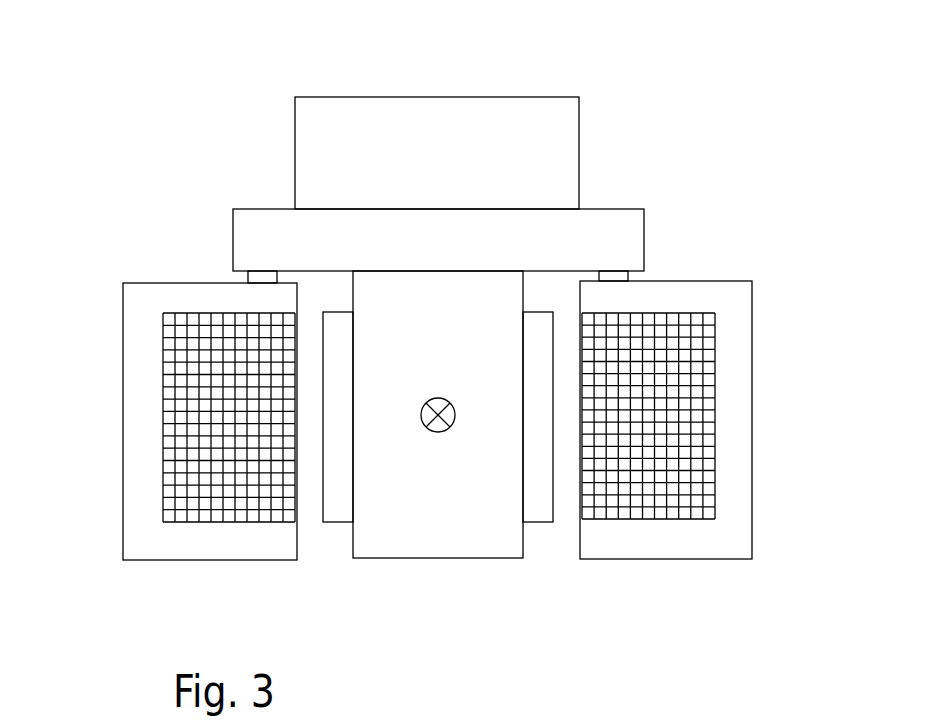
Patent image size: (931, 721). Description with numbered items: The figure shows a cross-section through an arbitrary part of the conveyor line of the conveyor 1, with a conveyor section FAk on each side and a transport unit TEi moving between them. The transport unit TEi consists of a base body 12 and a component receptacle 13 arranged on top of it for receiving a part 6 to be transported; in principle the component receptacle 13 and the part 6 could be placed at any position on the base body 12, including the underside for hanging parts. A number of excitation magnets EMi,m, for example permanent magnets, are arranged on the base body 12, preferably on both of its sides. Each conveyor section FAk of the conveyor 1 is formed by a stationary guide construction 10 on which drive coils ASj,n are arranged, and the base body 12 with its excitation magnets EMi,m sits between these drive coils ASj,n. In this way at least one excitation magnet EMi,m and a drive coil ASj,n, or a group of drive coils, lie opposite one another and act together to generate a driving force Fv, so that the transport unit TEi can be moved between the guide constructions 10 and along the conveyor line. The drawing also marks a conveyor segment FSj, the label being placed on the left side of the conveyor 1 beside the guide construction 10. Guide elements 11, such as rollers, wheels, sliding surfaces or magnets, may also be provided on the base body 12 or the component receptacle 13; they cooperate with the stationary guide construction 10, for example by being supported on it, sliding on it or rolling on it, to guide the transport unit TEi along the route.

The conveyor 1 is at (448, 331).
The part to be transported 6 is at (520, 127).
The stationary guide construction 10 is at (448, 469).
The guide elements 11 is at (263, 277).
The base body 12 is at (430, 487).
The component receptacle 13 is at (357, 235).
The transport unit TEi is at (427, 138).
The joint position j FSj is at (142, 257).
The conveyor section FAk is at (156, 470).
The drive coil ASj,n is at (210, 488).
The excitation magnet EMi,m is at (340, 468).
The driving force Fv is at (450, 400).